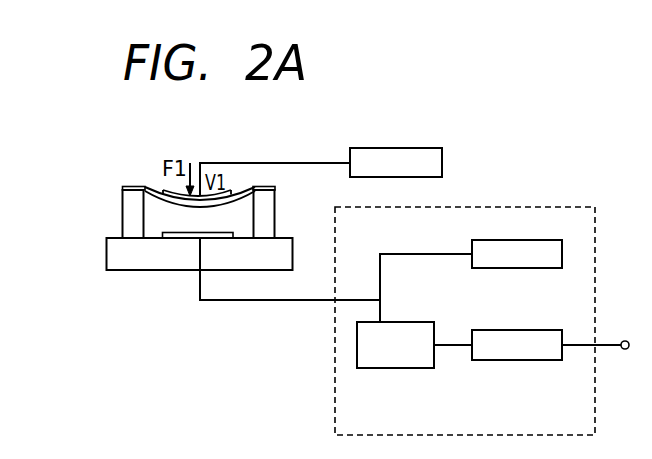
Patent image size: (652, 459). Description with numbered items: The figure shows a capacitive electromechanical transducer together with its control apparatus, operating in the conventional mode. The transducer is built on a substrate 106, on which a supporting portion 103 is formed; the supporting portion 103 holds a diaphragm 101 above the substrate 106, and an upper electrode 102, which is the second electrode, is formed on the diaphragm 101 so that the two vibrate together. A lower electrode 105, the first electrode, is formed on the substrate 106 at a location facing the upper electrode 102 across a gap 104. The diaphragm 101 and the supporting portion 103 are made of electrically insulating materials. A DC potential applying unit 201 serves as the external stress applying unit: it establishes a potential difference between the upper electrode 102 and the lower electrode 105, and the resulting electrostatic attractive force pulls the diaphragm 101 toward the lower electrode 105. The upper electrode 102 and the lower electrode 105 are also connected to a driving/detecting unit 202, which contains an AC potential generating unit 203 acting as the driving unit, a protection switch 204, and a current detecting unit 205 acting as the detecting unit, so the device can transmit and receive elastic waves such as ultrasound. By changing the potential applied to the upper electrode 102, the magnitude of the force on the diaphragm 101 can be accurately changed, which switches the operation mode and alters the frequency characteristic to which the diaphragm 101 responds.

The diaphragm 101 is at (131, 188).
The upper electrode 102 is at (163, 190).
The supporting portion 103 is at (127, 215).
The gap 104 is at (217, 221).
The lower electrode 105 is at (178, 237).
The substrate 106 is at (173, 263).
The DC potential applying unit 201 is at (408, 148).
The driving/detecting unit 202 is at (500, 207).
The AC potential generating unit 203 is at (537, 240).
The protection switch 204 is at (357, 351).
The current detecting unit 205 is at (533, 330).